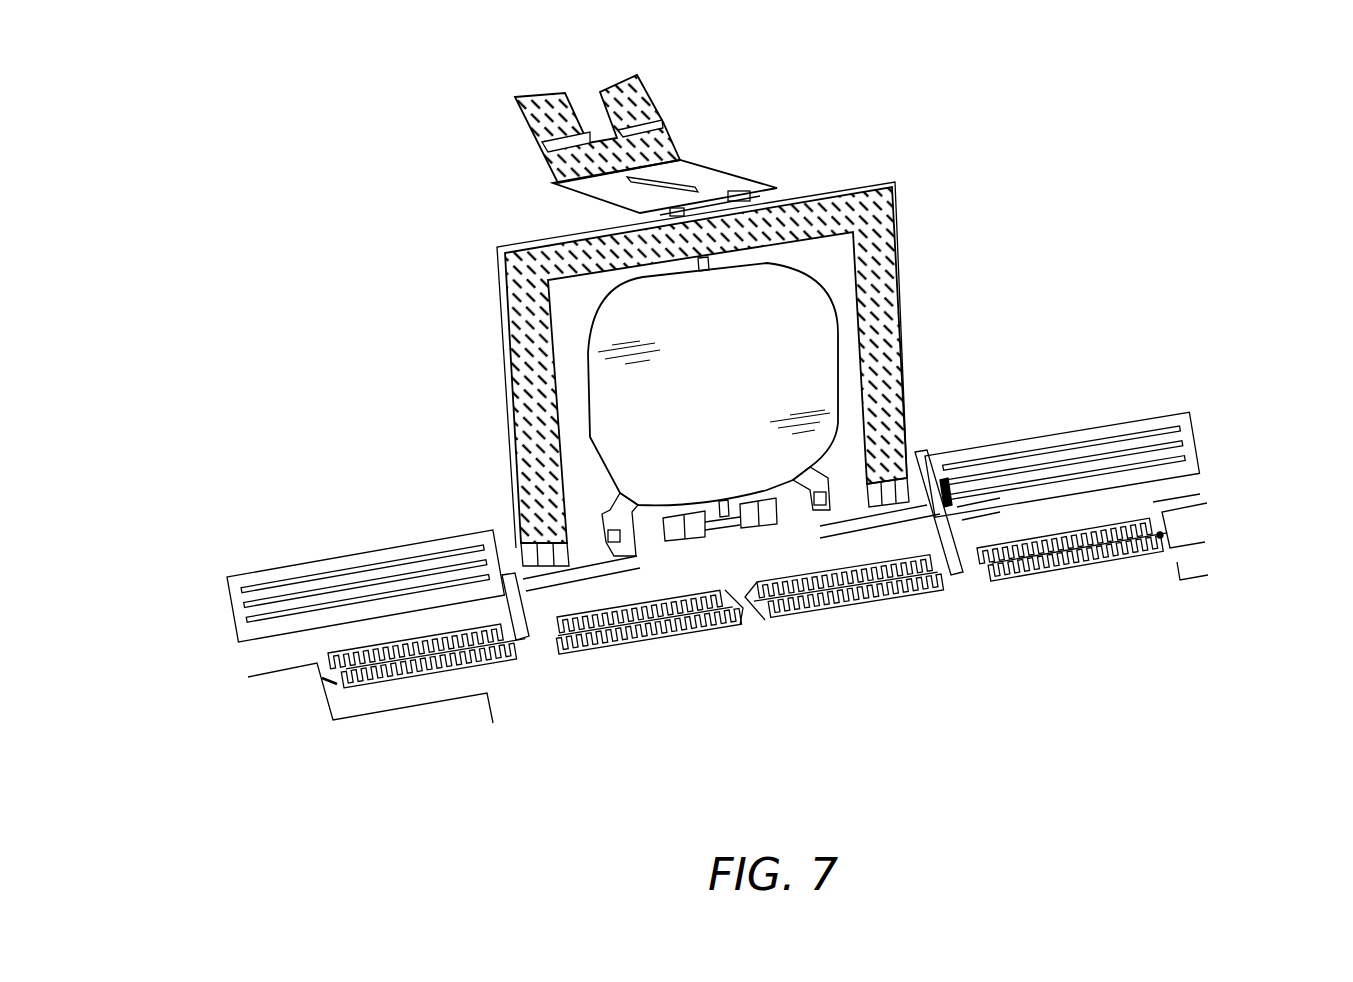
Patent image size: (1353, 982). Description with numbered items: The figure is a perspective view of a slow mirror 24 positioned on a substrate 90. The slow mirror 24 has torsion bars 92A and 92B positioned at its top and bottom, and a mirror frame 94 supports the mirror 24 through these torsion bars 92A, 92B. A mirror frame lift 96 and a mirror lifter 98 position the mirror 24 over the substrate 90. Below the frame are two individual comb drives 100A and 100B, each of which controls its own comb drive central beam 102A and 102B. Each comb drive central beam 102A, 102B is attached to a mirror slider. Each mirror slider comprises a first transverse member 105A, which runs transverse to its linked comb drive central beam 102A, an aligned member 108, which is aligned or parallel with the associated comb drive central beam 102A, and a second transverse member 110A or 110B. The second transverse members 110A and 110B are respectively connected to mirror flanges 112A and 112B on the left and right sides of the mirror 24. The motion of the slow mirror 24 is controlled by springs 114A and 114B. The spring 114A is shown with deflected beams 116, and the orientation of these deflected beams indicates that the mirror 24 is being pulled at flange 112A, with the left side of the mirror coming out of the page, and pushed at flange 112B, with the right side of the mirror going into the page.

The substrate 90 is at (445, 212).
The mirror lifter 98 is at (623, 115).
The mirror frame lift 96 is at (665, 170).
The mirror frame 94 is at (738, 374).
The slow mirror 24 is at (738, 322).
The torsion bar 92A is at (749, 288).
The torsion bar 92B is at (698, 477).
The mirror flange 112A is at (531, 477).
The second transverse member 110A is at (518, 495).
The aligned member 108 is at (540, 560).
The mirror flange 112B is at (897, 484).
The second transverse member 110B is at (776, 530).
The first transverse member 105A is at (732, 635).
The spring 114A is at (352, 545).
The deflected beam 116 is at (356, 536).
The comb drive 100A is at (428, 695).
The comb drive central beam 102A is at (359, 694).
The spring 114B is at (1062, 440).
The comb drive 100B is at (1134, 569).
The comb drive central beam 102B is at (1235, 537).